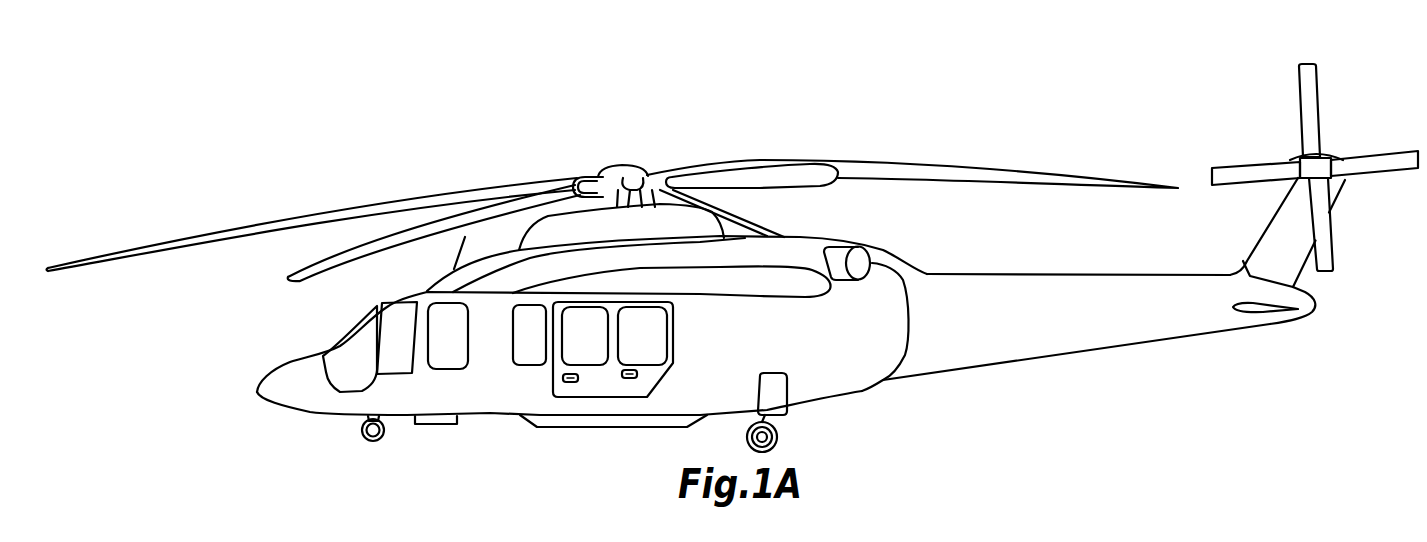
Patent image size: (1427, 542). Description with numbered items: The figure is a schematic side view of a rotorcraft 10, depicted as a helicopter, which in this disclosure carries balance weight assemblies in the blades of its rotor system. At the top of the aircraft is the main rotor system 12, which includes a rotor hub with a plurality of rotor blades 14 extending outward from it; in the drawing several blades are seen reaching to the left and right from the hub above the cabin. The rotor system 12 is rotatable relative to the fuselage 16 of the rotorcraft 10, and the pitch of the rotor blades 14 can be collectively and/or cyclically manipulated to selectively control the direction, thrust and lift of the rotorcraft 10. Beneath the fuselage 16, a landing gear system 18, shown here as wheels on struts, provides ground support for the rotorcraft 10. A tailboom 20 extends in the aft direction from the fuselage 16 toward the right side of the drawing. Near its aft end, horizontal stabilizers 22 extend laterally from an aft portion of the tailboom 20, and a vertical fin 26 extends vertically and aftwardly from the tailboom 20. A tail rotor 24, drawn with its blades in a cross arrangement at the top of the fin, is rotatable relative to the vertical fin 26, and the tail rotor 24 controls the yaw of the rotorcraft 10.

The rotorcraft 10 is at (766, 134).
The main rotor system 12 is at (617, 155).
The rotor blades 14 is at (996, 168).
The fuselage 16 is at (498, 408).
The landing gear system 18 is at (362, 439).
The tailboom 20 is at (1058, 345).
The horizontal stabilizers 22 is at (1254, 311).
The tail rotor 24 is at (1237, 167).
The vertical fin 26 is at (1267, 233).